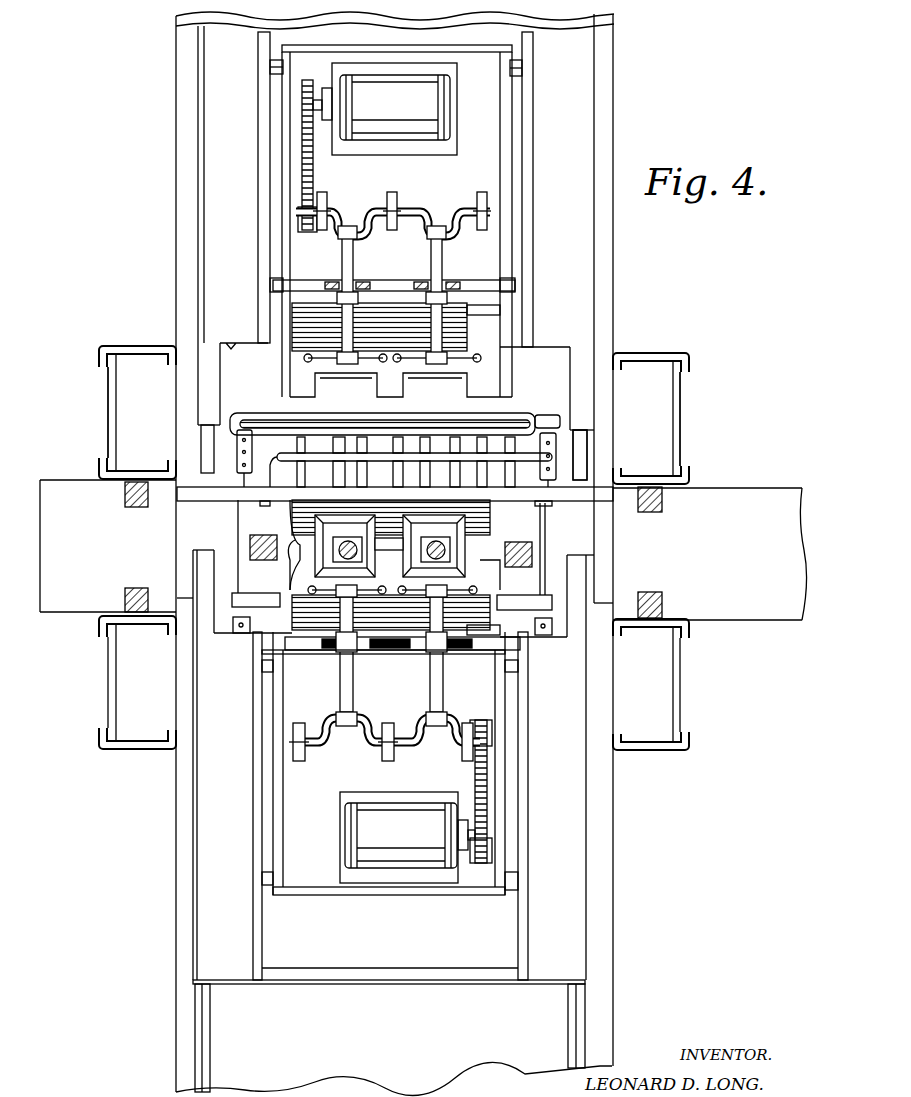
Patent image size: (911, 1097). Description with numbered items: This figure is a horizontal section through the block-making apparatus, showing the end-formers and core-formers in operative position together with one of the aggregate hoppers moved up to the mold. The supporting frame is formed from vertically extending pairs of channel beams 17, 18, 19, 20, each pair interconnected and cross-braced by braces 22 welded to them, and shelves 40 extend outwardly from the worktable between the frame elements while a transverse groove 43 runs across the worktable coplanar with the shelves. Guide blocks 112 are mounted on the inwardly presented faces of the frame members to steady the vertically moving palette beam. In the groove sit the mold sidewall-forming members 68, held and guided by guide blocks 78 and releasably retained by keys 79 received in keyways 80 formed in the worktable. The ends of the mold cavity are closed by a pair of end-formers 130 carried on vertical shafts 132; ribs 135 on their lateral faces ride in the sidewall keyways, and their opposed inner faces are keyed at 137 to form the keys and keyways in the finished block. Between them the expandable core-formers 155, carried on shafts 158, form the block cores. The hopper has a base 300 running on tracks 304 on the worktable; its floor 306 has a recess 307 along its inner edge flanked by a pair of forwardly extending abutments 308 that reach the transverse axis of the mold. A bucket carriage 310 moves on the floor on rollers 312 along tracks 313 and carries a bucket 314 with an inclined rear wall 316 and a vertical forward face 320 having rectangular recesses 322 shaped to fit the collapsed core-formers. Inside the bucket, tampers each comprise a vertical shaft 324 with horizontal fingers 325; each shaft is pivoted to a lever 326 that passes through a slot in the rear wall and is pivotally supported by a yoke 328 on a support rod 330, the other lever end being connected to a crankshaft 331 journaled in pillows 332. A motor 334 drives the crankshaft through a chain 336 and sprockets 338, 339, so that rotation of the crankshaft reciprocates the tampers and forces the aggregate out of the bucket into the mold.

The channel beam 17 is at (122, 345).
The channel beam 18 is at (104, 750).
The channel beam 19 is at (676, 352).
The channel beam 20 is at (658, 754).
The brace 22 is at (108, 410).
The shelf 40 is at (752, 486).
The groove 43 is at (183, 596).
The mold sidewall-forming member 68 is at (308, 496).
The guide block 78 is at (237, 466).
The key 79 is at (262, 412).
The keyway 80 is at (240, 428).
The guide block 112 is at (125, 496).
The end-former 130 is at (527, 530).
The shaft 132 is at (532, 554).
The rib 135 is at (268, 514).
The keying 137 is at (250, 546).
The expandable core-former 155 is at (444, 535).
The shaft 158 is at (348, 540).
The base 300 is at (210, 815).
The track 304 is at (580, 450).
The floor 306 is at (205, 880).
The recess 307 is at (230, 345).
The abutment 308 is at (205, 355).
The bucket carriage 310 is at (468, 897).
The roller 312 is at (270, 67).
The track 313 is at (258, 124).
The bucket 314 is at (495, 336).
The rear wall 316 is at (368, 282).
The forward face 320 is at (508, 408).
The recess 322 is at (420, 383).
The tamper shaft 324 is at (448, 357).
The finger 325 is at (470, 640).
The lever 326 is at (342, 268).
The yoke 328 is at (446, 275).
The support rod 330 is at (500, 290).
The crankshaft 331 is at (462, 210).
The pillow 332 is at (392, 204).
The motor 334 is at (407, 138).
The chain 336 is at (302, 164).
The sprocket 338 is at (492, 848).
The sprocket 339 is at (298, 218).